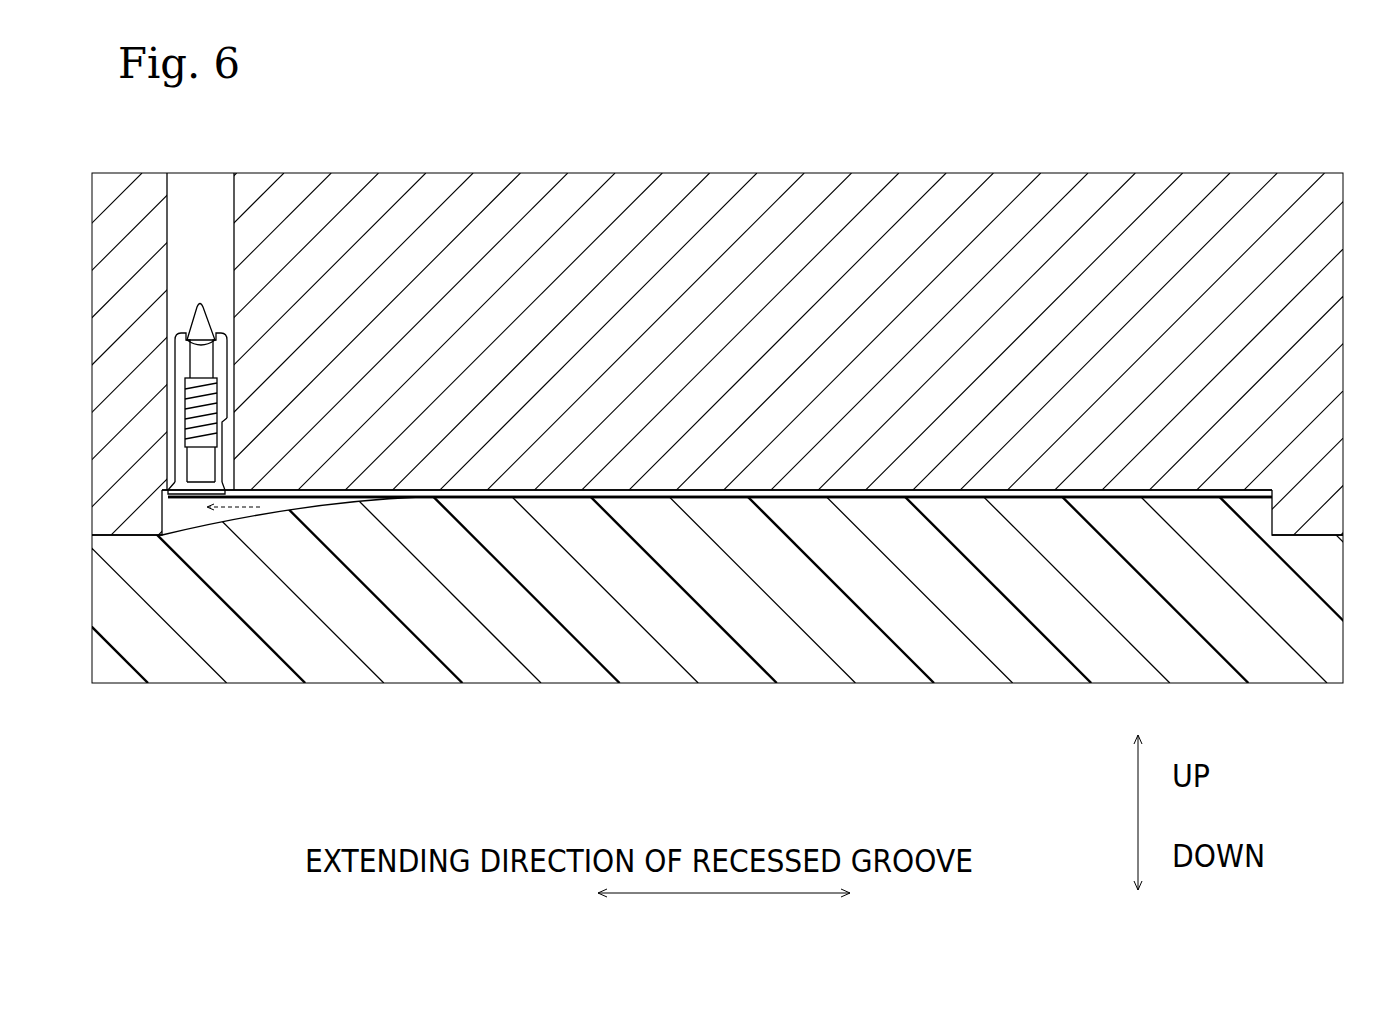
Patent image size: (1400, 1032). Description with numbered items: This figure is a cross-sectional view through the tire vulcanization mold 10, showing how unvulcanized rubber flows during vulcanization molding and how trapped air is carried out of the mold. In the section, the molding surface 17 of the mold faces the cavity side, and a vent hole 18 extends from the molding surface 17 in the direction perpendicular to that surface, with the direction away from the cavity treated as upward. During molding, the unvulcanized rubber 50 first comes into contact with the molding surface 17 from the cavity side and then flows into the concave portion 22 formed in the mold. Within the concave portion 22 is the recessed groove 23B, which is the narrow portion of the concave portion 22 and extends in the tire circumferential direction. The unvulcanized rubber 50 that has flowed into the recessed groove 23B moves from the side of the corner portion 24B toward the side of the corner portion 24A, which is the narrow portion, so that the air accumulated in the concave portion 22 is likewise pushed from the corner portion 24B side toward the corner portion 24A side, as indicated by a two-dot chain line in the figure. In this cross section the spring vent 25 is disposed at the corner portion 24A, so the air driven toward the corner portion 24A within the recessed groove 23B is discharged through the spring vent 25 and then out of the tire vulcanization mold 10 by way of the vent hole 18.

The tire vulcanization mold 10 is at (751, 317).
The vent hole 18 is at (214, 228).
The spring vent 25 is at (240, 373).
The recessed groove 23B is at (422, 490).
The concave portion 22 is at (717, 439).
The corner portion 24A is at (163, 488).
The corner portion 24B is at (1270, 490).
The molding surface 17 is at (130, 540).
The unvulcanized rubber 50 is at (738, 611).